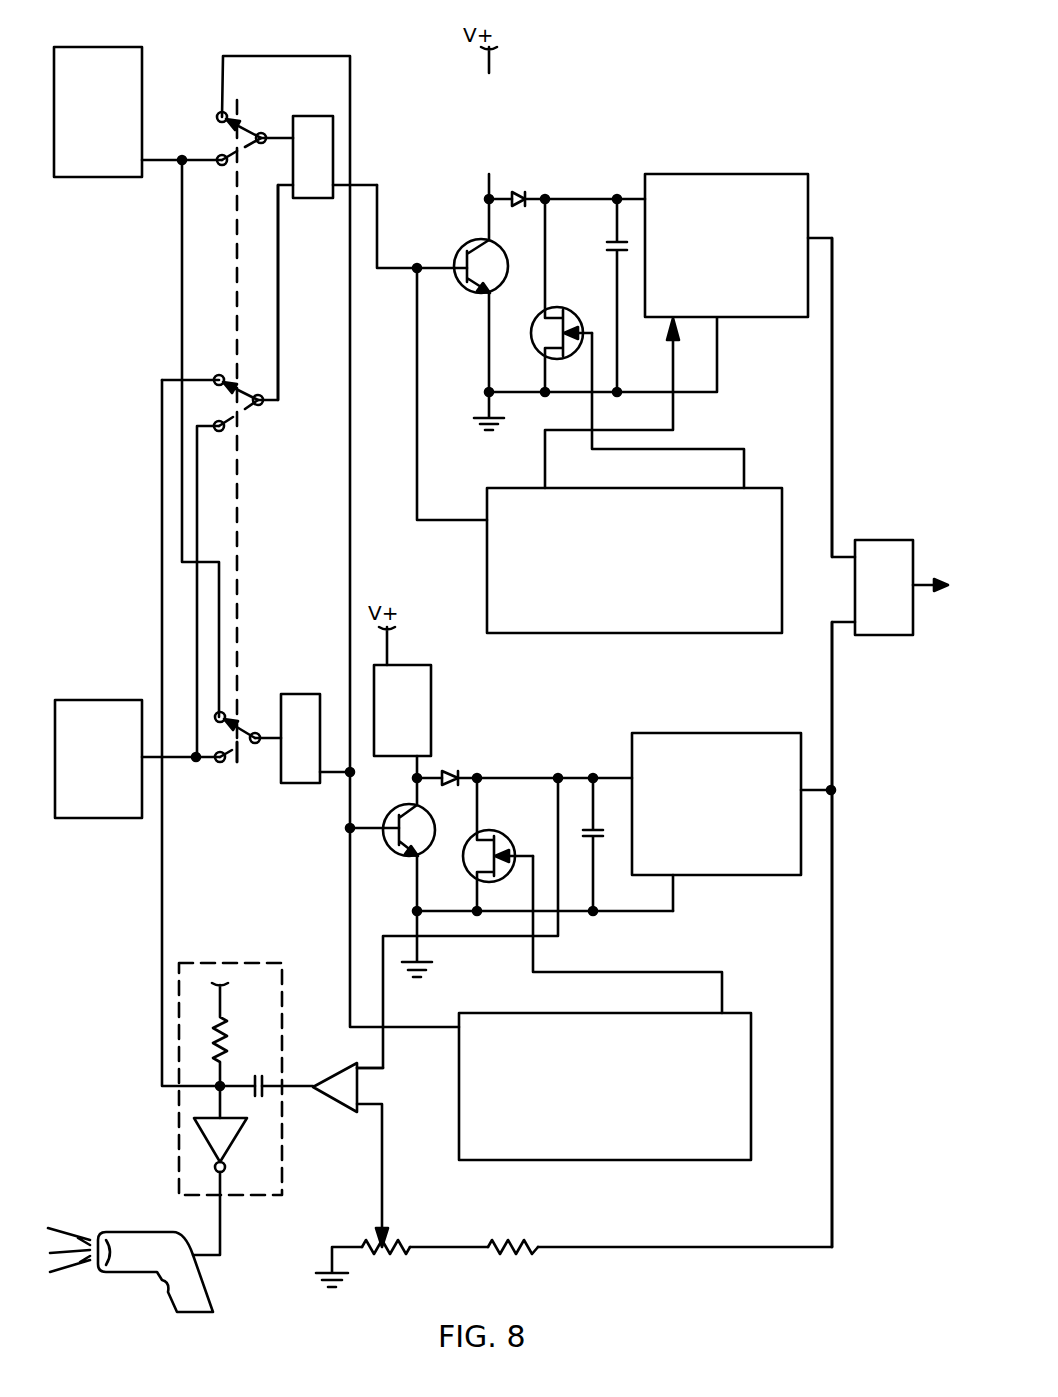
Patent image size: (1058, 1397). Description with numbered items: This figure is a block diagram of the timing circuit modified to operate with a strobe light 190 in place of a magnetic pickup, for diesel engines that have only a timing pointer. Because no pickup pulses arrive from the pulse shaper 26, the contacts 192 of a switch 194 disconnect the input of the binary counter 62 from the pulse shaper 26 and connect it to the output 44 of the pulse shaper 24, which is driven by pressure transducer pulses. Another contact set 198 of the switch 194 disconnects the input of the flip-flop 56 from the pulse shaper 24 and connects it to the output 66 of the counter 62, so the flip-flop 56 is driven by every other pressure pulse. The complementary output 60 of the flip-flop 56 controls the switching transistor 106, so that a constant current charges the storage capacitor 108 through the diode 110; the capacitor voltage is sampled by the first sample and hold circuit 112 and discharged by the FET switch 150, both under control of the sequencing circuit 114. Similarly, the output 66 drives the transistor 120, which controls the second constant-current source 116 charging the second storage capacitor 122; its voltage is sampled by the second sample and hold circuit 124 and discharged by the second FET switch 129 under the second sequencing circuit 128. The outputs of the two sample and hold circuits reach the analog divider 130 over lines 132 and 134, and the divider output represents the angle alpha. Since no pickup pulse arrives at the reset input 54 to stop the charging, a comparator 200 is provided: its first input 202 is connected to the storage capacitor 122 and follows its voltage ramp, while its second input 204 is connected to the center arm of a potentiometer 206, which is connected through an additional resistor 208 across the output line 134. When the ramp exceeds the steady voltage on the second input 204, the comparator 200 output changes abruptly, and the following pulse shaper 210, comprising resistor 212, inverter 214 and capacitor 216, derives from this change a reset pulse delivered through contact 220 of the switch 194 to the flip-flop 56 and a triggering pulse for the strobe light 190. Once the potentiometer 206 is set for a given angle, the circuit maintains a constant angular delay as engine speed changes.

The pulse shaper 24 is at (118, 47).
The pulse shaper 26 is at (80, 700).
The output of pulse shaper 44 is at (182, 250).
The reset input 54 is at (279, 366).
The flip-flop 56 is at (305, 116).
The complementary output of flip-flop 60 is at (378, 198).
The binary counter 62 is at (305, 694).
The output of the counter 66 is at (340, 775).
The switching transistor 106 is at (470, 244).
The storage capacitor 108 is at (607, 245).
The diode 110 is at (520, 193).
The first sample and hold circuit 112 is at (740, 174).
The sequencing circuit 114 is at (555, 633).
The second constant-current source 116 is at (431, 710).
The transistor 120 is at (399, 852).
The second storage capacitor 122 is at (614, 818).
The second sample and hold circuit 124 is at (710, 733).
The second sequencing circuit 128 is at (751, 1098).
The second FET switch 129 is at (500, 834).
The analog divider 130 is at (870, 540).
The line 132 is at (833, 395).
The line 134 is at (833, 716).
The FET switch 150 is at (566, 310).
The strobe light 190 is at (122, 1232).
The contacts 192 is at (226, 712).
The switch 194 is at (241, 768).
The contact set 198 is at (213, 126).
The comparator 200 is at (325, 1075).
The first input 202 is at (372, 1066).
The second input 204 is at (375, 1100).
The potentiometer 206 is at (386, 1243).
The additional resistor 208 is at (522, 1240).
The pulse shaper 210 is at (215, 963).
The resistor 212 is at (243, 1017).
The inverter 214 is at (230, 1146).
The capacitor 216 is at (254, 1078).
The contact 220 is at (217, 375).